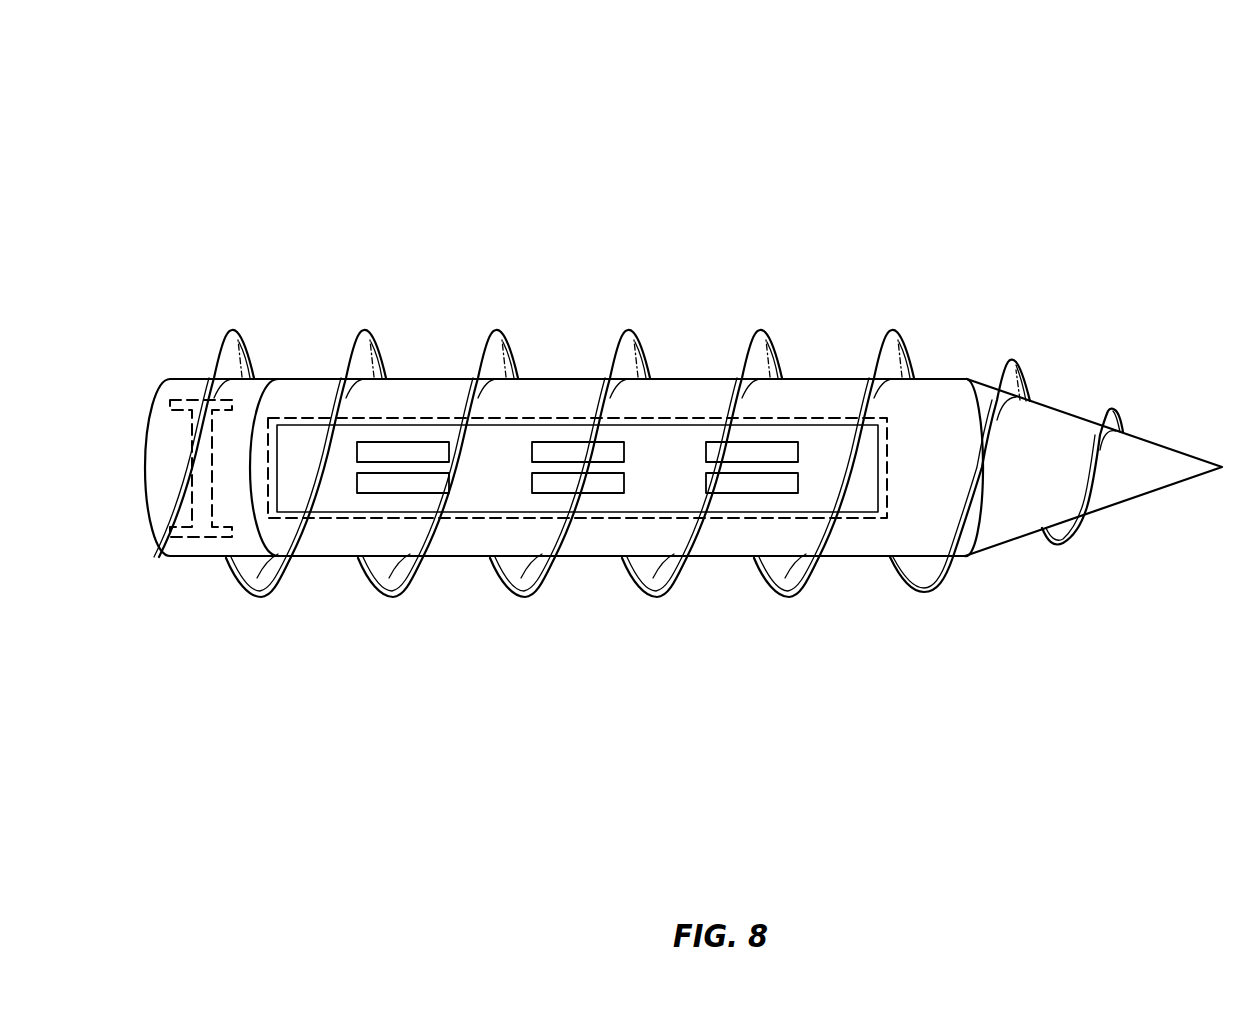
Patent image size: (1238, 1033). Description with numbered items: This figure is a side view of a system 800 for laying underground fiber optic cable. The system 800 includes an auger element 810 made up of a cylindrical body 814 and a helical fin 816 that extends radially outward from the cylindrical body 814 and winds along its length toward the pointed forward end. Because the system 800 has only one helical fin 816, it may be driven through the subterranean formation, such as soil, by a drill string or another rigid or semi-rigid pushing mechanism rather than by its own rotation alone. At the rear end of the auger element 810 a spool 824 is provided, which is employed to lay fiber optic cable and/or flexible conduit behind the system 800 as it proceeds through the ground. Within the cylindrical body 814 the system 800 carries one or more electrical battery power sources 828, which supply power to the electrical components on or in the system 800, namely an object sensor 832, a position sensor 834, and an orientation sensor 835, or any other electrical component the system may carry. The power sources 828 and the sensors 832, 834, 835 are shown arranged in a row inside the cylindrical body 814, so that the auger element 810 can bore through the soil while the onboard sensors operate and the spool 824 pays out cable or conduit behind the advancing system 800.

The system for laying underground fiber optic cable 800 is at (150, 98).
The auger element 810 is at (358, 260).
The cylindrical body 814 is at (675, 378).
The helical fin 816 is at (895, 332).
The spool 824 is at (181, 400).
The electrical battery power sources 828 is at (408, 473).
The object sensor 832 is at (733, 494).
The position sensor 834 is at (771, 442).
The orientation sensor 835 is at (546, 442).